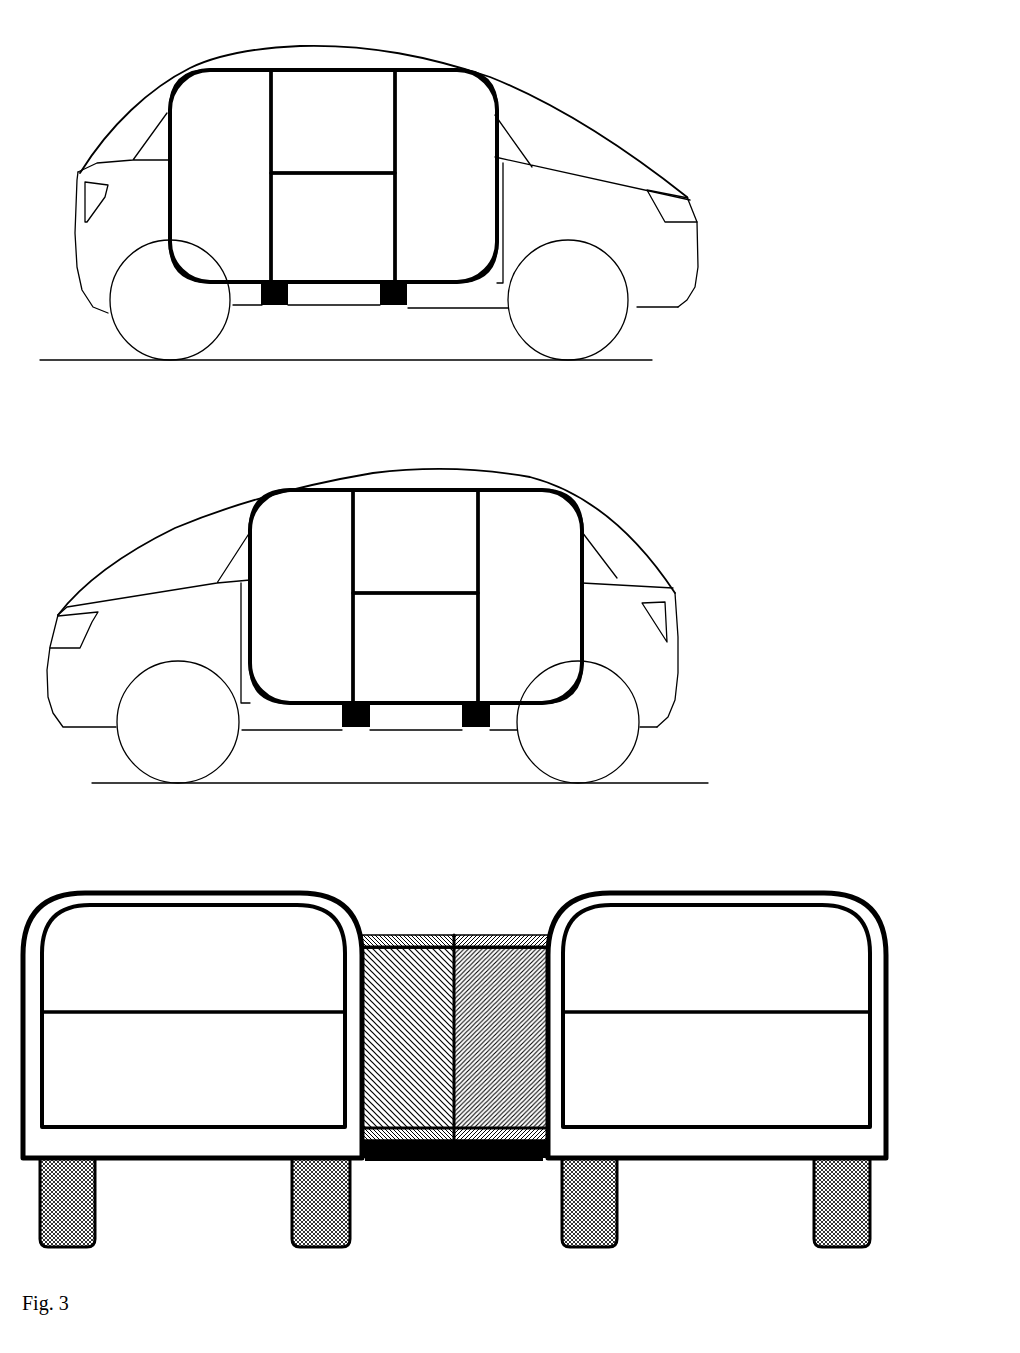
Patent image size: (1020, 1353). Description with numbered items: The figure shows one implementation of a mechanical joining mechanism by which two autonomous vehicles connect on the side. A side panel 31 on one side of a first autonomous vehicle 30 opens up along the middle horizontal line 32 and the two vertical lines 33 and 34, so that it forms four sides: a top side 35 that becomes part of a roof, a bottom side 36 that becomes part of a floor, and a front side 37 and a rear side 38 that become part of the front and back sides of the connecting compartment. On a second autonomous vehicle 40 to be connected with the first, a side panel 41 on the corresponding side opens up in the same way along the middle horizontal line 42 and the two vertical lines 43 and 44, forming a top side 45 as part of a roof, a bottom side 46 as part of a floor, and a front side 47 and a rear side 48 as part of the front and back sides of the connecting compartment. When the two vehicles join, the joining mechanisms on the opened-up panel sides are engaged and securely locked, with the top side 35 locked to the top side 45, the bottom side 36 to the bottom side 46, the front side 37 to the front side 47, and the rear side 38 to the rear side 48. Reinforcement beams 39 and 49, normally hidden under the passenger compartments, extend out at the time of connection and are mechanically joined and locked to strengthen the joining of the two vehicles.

The first autonomous vehicle 30 is at (548, 92).
The side panel 31 is at (275, 68).
The middle horizontal line 32 is at (334, 174).
The vertical line 33 is at (398, 160).
The vertical line 34 is at (268, 195).
The top side 35 is at (410, 932).
The bottom side 36 is at (360, 1128).
The front side 37 is at (446, 176).
The rear side 38 is at (322, 1062).
The reinforcement beam 39 is at (272, 306).
The second autonomous vehicle 40 is at (200, 512).
The side panel 41 is at (477, 488).
The middle horizontal line 42 is at (413, 595).
The vertical line 43 is at (352, 580).
The vertical line 44 is at (480, 617).
The top side 45 is at (492, 932).
The bottom side 46 is at (606, 1106).
The front side 47 is at (301, 596).
The rear side 48 is at (598, 1060).
The reinforcement beam 49 is at (357, 730).